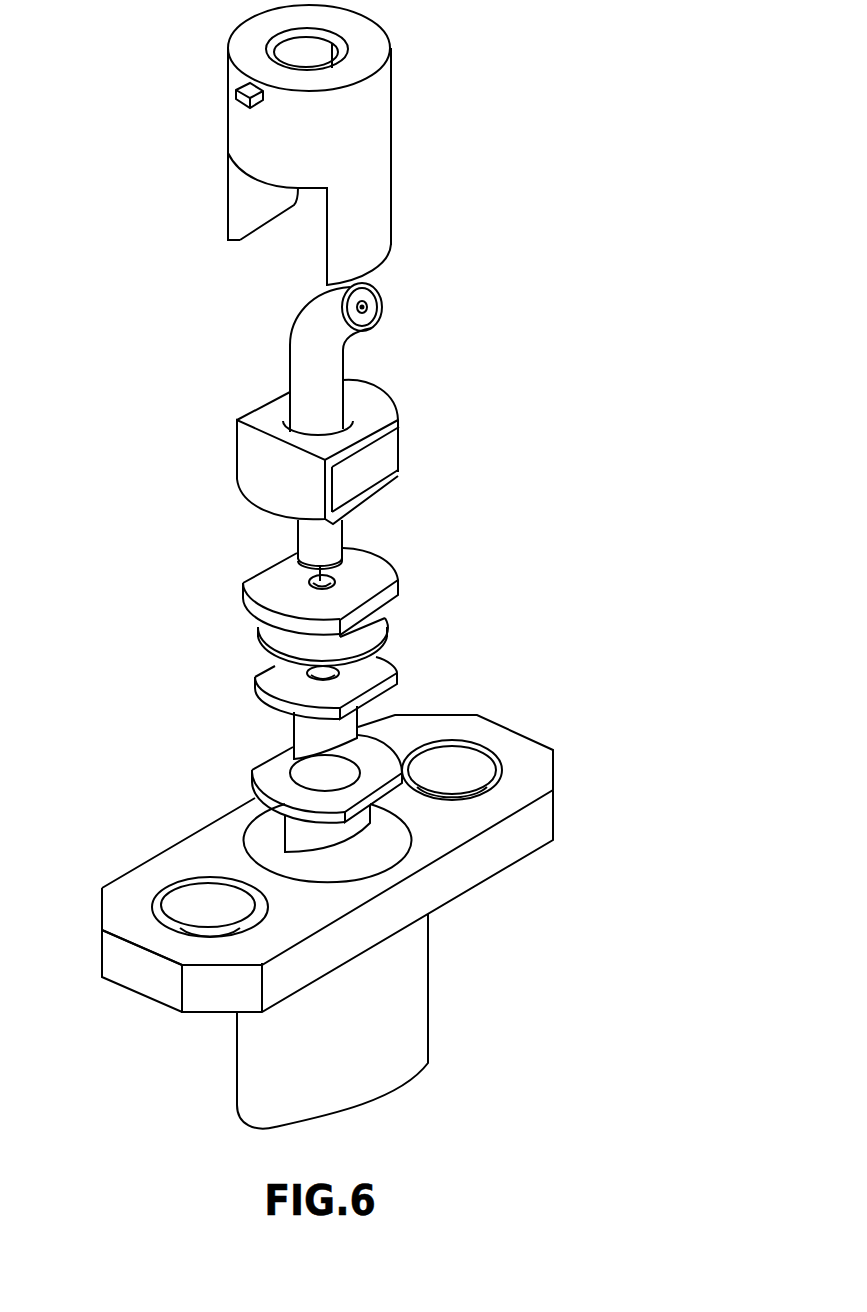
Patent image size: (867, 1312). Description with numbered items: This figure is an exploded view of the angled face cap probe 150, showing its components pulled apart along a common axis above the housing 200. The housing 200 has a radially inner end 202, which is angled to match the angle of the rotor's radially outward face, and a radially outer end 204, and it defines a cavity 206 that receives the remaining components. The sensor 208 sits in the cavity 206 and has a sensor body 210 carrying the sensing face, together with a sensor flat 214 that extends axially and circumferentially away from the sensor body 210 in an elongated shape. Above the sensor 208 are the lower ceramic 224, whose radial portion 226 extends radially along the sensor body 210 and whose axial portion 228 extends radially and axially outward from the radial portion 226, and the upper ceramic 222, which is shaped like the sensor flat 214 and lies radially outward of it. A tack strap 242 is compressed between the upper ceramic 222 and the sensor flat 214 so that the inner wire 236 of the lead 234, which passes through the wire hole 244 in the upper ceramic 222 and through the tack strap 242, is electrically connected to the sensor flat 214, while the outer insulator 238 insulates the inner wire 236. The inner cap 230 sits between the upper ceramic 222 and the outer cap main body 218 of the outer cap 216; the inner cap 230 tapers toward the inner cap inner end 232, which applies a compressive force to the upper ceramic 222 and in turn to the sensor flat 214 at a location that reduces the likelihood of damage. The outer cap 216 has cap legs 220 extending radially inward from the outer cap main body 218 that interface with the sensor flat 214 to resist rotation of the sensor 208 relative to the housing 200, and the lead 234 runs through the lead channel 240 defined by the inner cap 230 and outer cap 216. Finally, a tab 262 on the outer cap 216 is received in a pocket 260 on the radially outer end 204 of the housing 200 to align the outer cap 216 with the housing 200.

The angled face cap probe 150 is at (592, 282).
The housing 200 is at (360, 876).
The radially inner end 202 is at (402, 1087).
The radially outer end 204 is at (315, 818).
The cavity 206 is at (380, 840).
The sensor 208 is at (267, 677).
The sensor body 210 is at (303, 733).
The sensor flat 214 is at (313, 648).
The outer cap 216 is at (373, 89).
The outer cap main body 218 is at (304, 146).
The cap legs 220 is at (325, 284).
The upper ceramic 222 is at (295, 564).
The lower ceramic 224 is at (268, 780).
The radial portion 226 is at (297, 840).
The axial portion 228 is at (379, 760).
The inner cap 230 is at (377, 407).
The inner cap inner end 232 is at (287, 517).
The lead 234 is at (347, 349).
The inner wire 236 is at (362, 307).
The outer insulator 238 is at (332, 359).
The lead channel 240 is at (298, 196).
The tack strap 242 is at (265, 635).
The wire hole 244 is at (317, 579).
The pocket 260 is at (268, 878).
The tab 262 is at (236, 93).